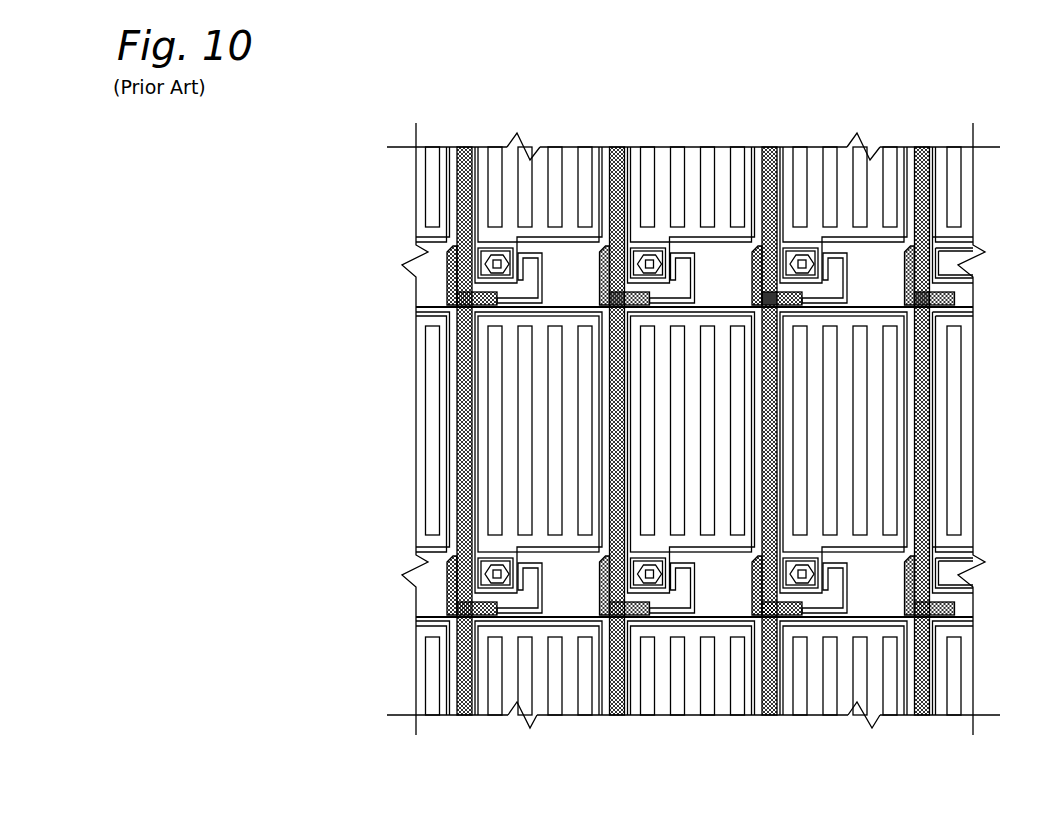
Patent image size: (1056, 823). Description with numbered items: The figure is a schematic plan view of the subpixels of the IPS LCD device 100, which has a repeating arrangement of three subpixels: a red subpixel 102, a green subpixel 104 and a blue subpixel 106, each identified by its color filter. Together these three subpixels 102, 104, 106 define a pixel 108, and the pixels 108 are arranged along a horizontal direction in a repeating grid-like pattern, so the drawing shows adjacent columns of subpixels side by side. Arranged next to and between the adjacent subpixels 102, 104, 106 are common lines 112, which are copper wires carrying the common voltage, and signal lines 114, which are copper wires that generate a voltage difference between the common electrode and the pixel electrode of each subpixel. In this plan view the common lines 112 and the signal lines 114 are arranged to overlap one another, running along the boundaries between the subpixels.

The IPS LCD device 100 is at (334, 130).
The red subpixel 102 is at (475, 122).
The green subpixel 104 is at (628, 122).
The blue subpixel 106 is at (782, 122).
The pixel 108 is at (475, 60).
The common line 112 is at (925, 717).
The signal line 114 is at (920, 586).